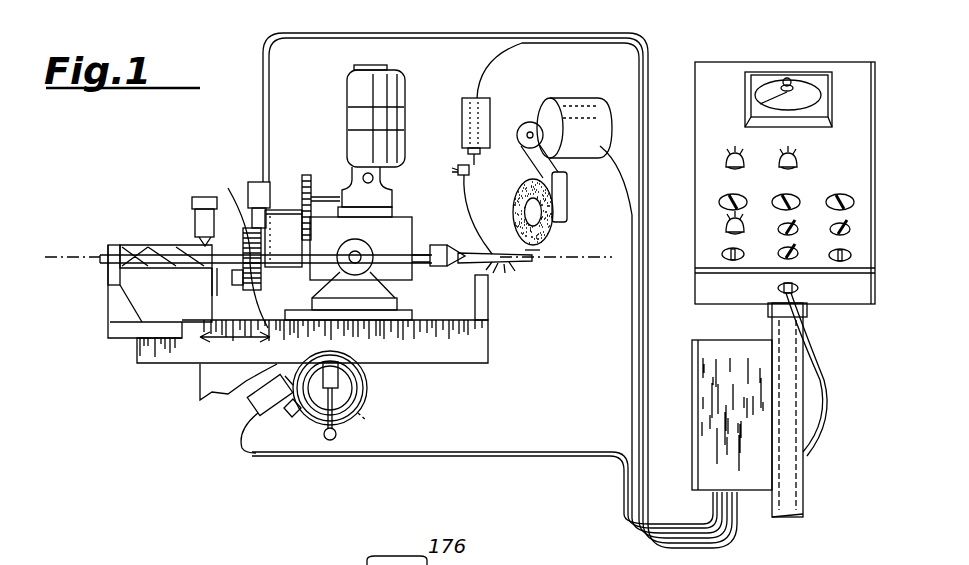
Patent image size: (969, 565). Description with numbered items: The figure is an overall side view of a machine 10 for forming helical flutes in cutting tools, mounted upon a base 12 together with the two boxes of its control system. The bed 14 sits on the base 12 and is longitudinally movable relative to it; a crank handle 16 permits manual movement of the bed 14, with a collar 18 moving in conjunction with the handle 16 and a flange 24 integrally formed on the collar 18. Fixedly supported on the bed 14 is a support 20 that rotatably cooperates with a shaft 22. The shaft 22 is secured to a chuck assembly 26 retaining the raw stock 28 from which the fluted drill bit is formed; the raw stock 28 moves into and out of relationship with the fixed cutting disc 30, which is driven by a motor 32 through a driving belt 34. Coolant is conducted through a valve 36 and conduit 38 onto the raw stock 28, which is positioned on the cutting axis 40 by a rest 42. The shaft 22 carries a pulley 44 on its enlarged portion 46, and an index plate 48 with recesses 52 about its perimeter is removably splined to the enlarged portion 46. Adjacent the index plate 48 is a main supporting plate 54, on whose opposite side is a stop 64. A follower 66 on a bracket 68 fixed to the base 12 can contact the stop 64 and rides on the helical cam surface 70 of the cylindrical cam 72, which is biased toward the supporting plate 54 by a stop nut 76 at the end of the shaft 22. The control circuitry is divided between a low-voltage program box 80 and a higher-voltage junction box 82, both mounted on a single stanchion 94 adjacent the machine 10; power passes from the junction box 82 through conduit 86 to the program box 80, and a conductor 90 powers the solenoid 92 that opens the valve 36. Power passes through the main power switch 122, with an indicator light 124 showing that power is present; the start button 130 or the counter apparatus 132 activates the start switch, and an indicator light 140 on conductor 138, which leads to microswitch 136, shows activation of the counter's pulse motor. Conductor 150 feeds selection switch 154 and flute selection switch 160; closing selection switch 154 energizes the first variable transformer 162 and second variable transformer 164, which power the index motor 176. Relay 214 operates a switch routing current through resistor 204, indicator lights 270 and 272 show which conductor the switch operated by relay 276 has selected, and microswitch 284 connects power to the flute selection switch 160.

The machine 10 is at (577, 20).
The base 12 is at (200, 373).
The bed 14 is at (153, 352).
The crank handle 16 is at (338, 432).
The collar 18 is at (367, 392).
The support 20 is at (398, 245).
The shaft 22 is at (107, 253).
The flange 24 is at (281, 418).
The chuck assembly 26 is at (448, 268).
The raw stock 28 is at (503, 264).
The cutting disc 30 is at (534, 255).
The motor 32 is at (586, 102).
The driving belt 34 is at (562, 184).
The valve 36 is at (458, 167).
The conduit 38 is at (468, 197).
The cutting axis 40 is at (92, 258).
The rest 42 is at (483, 308).
The pulley 44 is at (312, 268).
The enlarged portion 46 is at (286, 235).
The index plate 48 is at (261, 285).
The recesses 52 is at (272, 271).
The main supporting plate 54 is at (247, 256).
The stop 64 is at (216, 282).
The follower 66 is at (193, 224).
The bracket 68 is at (205, 290).
The cam surface 70 is at (157, 247).
The cam 72 is at (118, 284).
The stop nut 76 is at (113, 245).
The program box 80 is at (863, 100).
The junction box 82 is at (743, 407).
The conduit 86 is at (826, 376).
The conductor 90 is at (578, 44).
The solenoid 92 is at (484, 110).
The stanchion 94 is at (804, 469).
The main power switch 122 is at (727, 256).
The indicator light 124 is at (726, 229).
The start button 130 is at (795, 82).
The counter apparatus 132 is at (805, 88).
The microswitch 136 is at (273, 180).
The conductor 138 is at (358, 33).
The indicator light 140 is at (787, 78).
The conductor 150 is at (525, 449).
The selection switch 154 is at (848, 225).
The flute selection switch 160 is at (780, 226).
The first variable transformer 162 is at (720, 200).
The second variable transformer 164 is at (797, 198).
The index motor 176 is at (398, 91).
The resistor 204 is at (848, 200).
The relay 214 is at (849, 253).
The indicator light 270 is at (797, 163).
The indicator light 272 is at (726, 160).
The relay 276 is at (793, 258).
The microswitch 284 is at (267, 397).